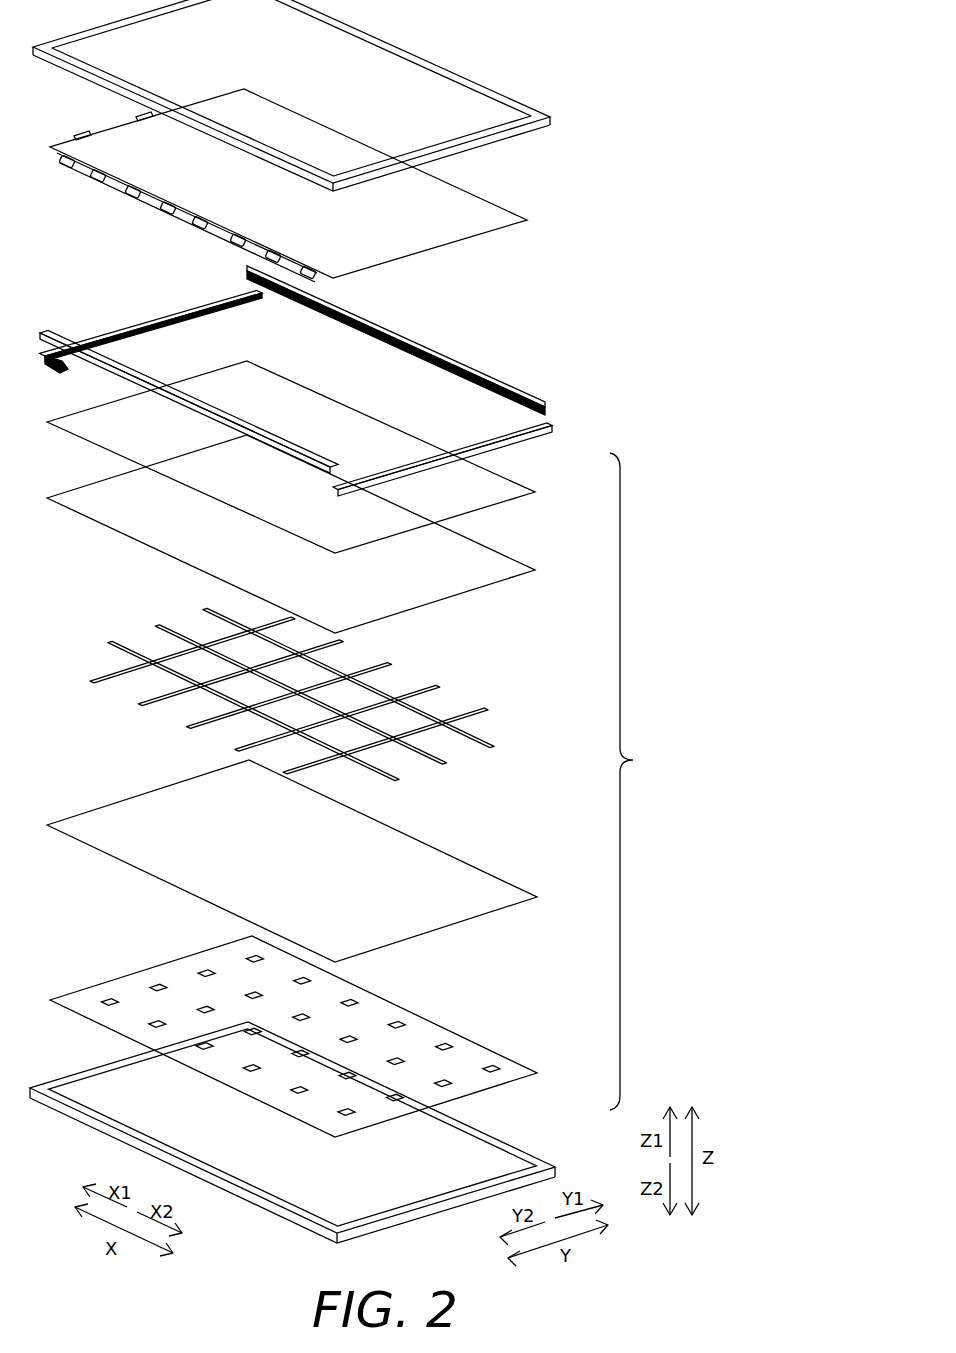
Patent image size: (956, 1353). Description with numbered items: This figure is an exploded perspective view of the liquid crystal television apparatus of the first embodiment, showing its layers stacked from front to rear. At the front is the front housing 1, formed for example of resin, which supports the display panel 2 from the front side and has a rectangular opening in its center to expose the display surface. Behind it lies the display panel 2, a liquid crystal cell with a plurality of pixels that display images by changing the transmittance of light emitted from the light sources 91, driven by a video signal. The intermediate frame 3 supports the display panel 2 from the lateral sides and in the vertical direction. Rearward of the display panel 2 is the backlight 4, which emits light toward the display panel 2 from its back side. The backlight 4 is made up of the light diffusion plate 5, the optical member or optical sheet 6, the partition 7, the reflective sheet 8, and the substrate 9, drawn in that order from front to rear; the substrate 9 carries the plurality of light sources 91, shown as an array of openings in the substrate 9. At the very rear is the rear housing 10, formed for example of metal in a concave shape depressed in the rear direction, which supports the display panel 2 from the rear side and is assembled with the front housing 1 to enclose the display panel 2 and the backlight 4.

The front housing 1 is at (553, 117).
The display panel 2 is at (497, 215).
The intermediate frame 3 is at (518, 380).
The backlight 4 is at (630, 781).
The light diffusion plate 5 is at (500, 493).
The optical sheet 6 is at (507, 573).
The partition 7 is at (488, 716).
The reflective sheet 8 is at (505, 897).
The substrate 9 is at (314, 1019).
The light sources 91 is at (108, 997).
The rear housing 10 is at (475, 1152).